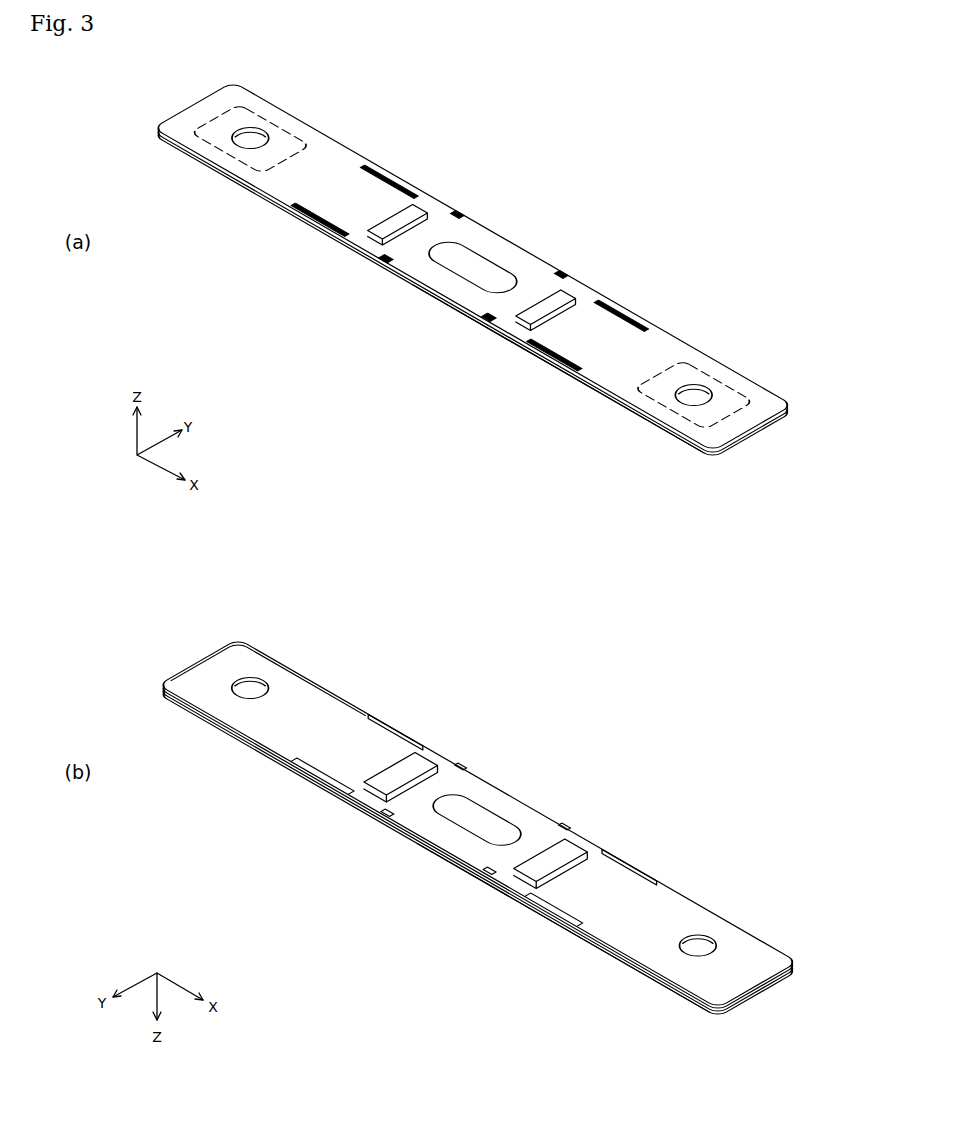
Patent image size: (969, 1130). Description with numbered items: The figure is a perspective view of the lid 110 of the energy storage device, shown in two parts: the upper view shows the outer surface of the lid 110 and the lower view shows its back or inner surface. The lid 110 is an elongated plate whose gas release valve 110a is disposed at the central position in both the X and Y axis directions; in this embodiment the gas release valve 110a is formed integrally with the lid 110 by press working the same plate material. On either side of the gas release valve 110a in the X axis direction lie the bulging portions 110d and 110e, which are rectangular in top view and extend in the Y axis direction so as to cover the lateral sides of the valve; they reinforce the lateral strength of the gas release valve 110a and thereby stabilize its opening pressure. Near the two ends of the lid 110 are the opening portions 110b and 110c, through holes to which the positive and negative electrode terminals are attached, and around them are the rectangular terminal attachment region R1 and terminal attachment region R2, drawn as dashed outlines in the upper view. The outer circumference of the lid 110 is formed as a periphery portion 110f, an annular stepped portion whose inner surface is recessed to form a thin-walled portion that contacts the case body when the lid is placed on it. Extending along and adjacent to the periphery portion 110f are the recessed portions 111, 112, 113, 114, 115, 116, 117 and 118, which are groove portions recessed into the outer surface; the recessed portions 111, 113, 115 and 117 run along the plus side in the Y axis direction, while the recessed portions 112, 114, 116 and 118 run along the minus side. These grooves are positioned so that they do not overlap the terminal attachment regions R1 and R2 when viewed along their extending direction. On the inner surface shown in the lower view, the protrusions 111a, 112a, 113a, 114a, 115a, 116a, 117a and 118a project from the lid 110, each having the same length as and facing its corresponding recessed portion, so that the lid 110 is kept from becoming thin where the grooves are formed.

The lid 110 is at (682, 534).
The gas release valve 110a is at (488, 255).
The opening portion 110b is at (696, 410).
The opening portion 110c is at (240, 148).
The bulging portion 110d is at (572, 293).
The bulging portion 110e is at (425, 207).
The periphery portion 110f is at (620, 406).
The recessed portion 111 is at (627, 303).
The recessed portion 112 is at (545, 362).
The recessed portion 113 is at (388, 178).
The recessed portion 114 is at (313, 227).
The recessed portion 115 is at (560, 270).
The recessed portion 116 is at (488, 317).
The recessed portion 117 is at (453, 211).
The recessed portion 118 is at (383, 260).
The protrusion 111a is at (547, 917).
The protrusion 112a is at (633, 857).
The protrusion 113a is at (313, 780).
The protrusion 114a is at (398, 730).
The protrusion 115a is at (488, 870).
The protrusion 116a is at (565, 823).
The protrusion 117a is at (383, 823).
The protrusion 118a is at (463, 760).
The terminal attachment region R1 is at (718, 387).
The terminal attachment region R2 is at (273, 123).